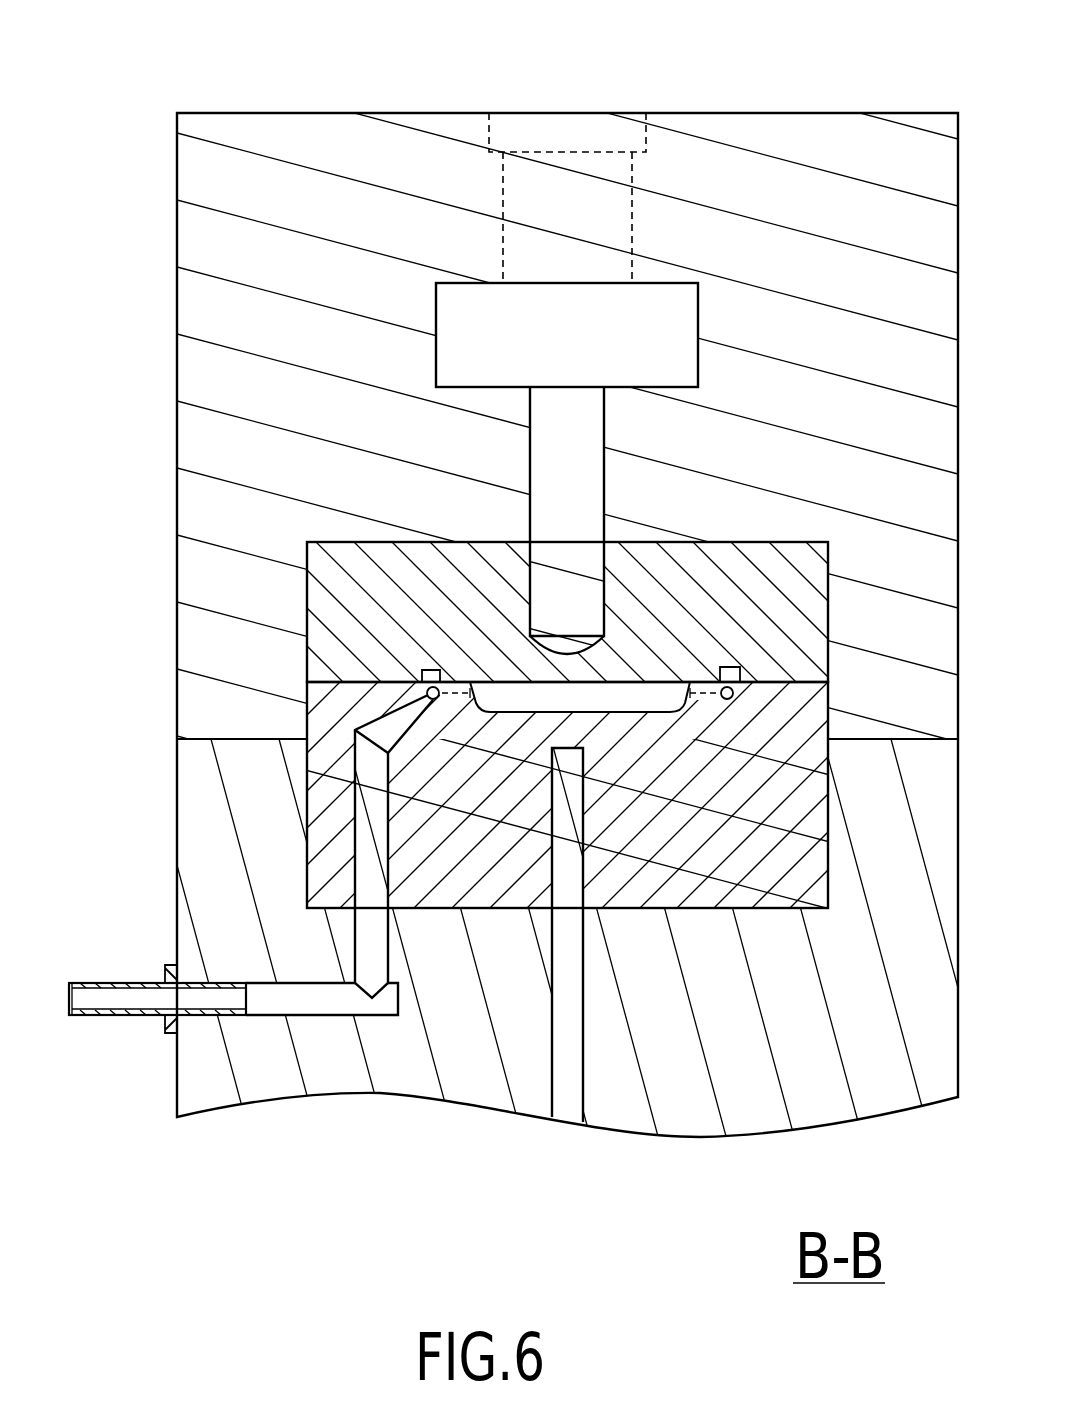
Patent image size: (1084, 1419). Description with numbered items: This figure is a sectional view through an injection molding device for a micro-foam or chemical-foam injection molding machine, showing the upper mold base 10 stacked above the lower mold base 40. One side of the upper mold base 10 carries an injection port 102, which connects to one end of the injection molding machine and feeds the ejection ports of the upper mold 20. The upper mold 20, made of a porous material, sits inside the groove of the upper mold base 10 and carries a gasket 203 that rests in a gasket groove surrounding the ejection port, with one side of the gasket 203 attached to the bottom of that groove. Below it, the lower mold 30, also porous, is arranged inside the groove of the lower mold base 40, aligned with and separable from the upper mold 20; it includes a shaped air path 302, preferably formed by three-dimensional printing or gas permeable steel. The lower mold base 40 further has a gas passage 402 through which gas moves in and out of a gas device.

The upper mold base 10 is at (210, 190).
The injection port 102 is at (490, 133).
The upper mold 20 is at (388, 555).
The gasket 203 is at (425, 680).
The shaped air path 302 is at (427, 693).
The lower mold 30 is at (330, 843).
The gas passage 402 is at (368, 788).
The lower mold base 40 is at (250, 1072).